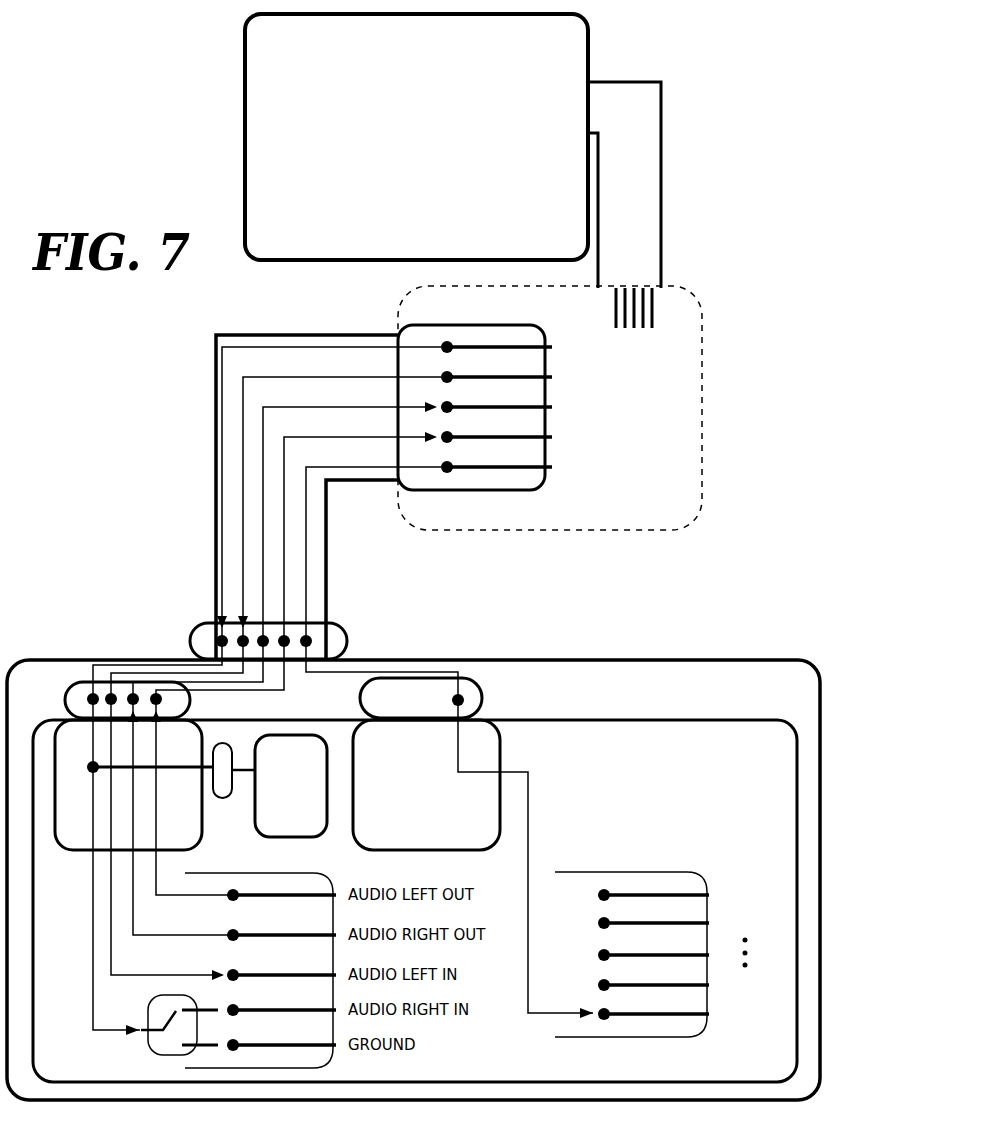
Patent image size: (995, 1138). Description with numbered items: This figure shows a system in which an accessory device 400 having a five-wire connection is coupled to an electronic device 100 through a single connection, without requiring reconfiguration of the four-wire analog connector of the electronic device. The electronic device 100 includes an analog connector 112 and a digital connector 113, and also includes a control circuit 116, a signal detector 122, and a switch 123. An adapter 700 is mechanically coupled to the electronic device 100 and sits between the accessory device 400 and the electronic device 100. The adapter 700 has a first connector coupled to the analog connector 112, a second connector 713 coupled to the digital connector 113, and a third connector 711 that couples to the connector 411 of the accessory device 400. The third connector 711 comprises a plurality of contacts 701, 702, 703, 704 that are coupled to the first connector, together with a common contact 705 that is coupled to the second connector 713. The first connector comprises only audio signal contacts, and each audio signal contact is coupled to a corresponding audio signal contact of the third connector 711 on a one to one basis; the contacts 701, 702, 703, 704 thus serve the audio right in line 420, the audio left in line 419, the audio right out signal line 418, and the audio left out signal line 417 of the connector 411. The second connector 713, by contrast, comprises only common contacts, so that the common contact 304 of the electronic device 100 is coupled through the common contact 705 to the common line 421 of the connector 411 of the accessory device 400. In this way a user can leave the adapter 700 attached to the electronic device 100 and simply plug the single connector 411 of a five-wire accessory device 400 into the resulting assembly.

The accessory device 400 is at (199, 102).
The connector 411 is at (392, 302).
The audio right in line 420 is at (667, 333).
The audio left in line 419 is at (668, 378).
The audio right out signal line 418 is at (700, 408).
The audio left out signal line 417 is at (688, 438).
The common line 421 is at (632, 467).
The contact 701 is at (216, 628).
The contact 702 is at (238, 624).
The contact 703 is at (256, 624).
The contact 704 is at (285, 624).
The common contact 705 is at (320, 624).
The third connector 711 is at (347, 638).
The second connector 713 is at (483, 700).
The adapter 700 is at (612, 660).
The electronic device 100 is at (718, 720).
The digital connector 113 is at (500, 748).
The analog connector 112 is at (76, 851).
The signal detector 122 is at (222, 799).
The control circuit 116 is at (300, 837).
The switch 123 is at (157, 1054).
The common contact 304 is at (656, 1017).